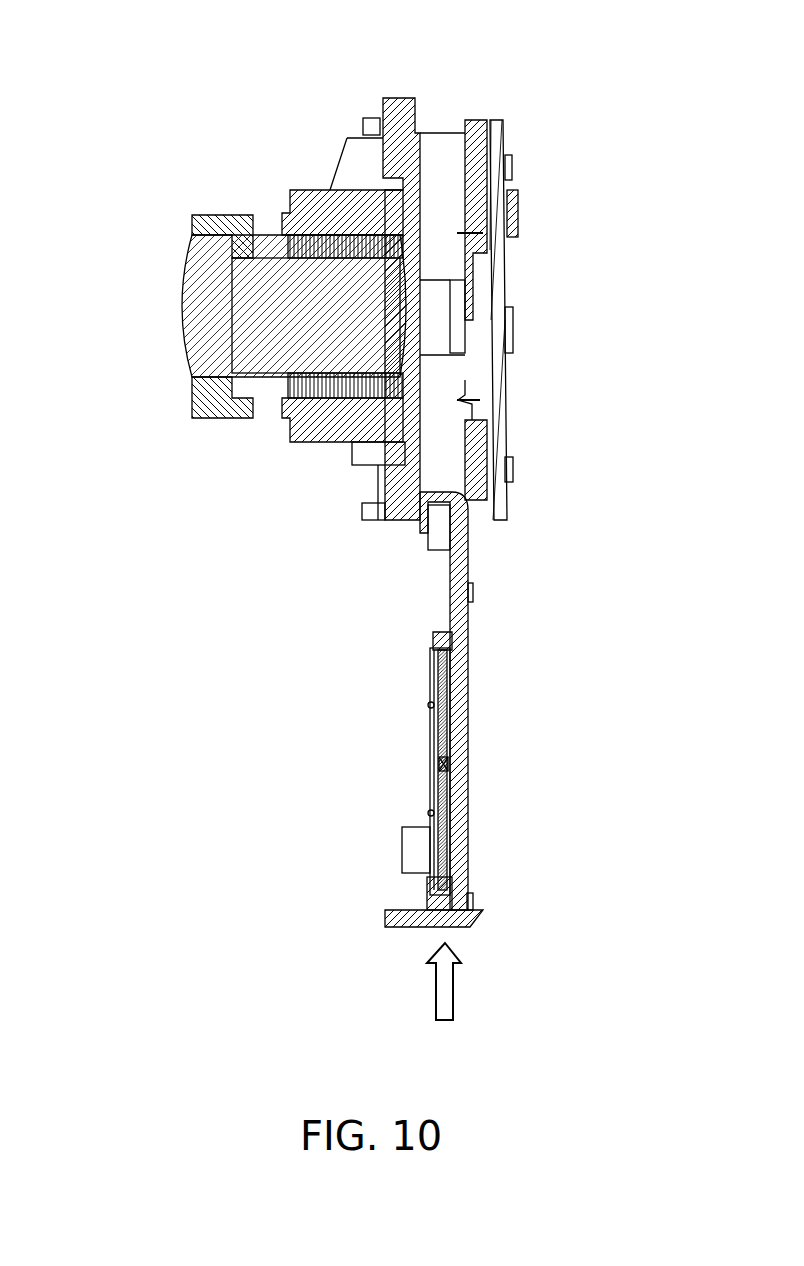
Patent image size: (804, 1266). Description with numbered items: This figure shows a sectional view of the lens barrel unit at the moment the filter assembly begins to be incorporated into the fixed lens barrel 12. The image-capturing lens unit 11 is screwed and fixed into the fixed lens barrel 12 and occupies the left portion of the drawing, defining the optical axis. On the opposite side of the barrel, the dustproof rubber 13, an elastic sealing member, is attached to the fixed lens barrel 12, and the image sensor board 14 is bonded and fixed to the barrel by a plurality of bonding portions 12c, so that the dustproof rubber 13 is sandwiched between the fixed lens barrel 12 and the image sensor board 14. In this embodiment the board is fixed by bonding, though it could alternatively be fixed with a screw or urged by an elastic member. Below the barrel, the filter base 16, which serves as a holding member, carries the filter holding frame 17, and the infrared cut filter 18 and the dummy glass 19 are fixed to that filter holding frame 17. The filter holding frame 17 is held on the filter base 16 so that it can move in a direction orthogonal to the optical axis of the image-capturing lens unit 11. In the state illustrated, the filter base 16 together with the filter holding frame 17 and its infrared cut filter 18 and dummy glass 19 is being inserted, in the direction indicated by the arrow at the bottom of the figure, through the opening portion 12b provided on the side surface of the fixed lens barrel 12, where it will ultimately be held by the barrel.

The image-capturing lens unit 11 is at (205, 340).
The fixed lens barrel 12 is at (383, 100).
The opening portion 12b is at (445, 470).
The bonding portions 12c is at (514, 472).
The dustproof rubber 13 is at (500, 405).
The image sensor board 14 is at (503, 435).
The filter base 16 is at (467, 852).
The filter holding frame 17 is at (440, 765).
The infrared cut filter 18 is at (440, 705).
The dummy glass 19 is at (440, 820).